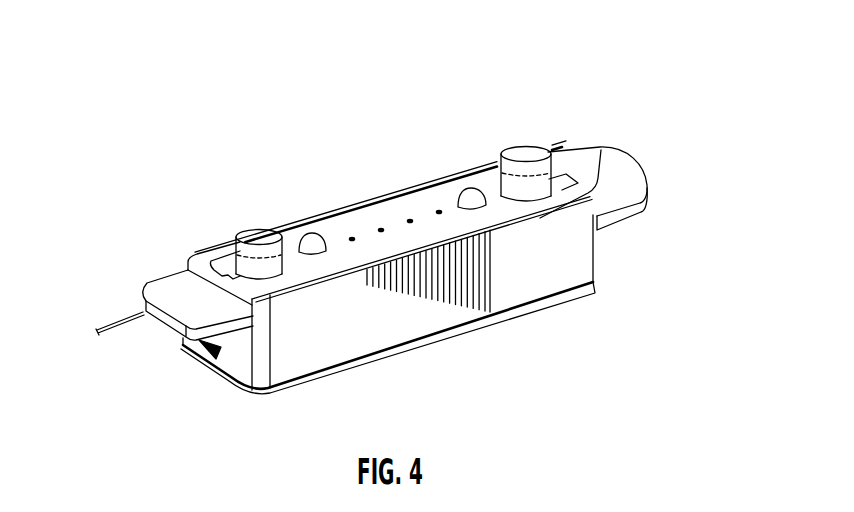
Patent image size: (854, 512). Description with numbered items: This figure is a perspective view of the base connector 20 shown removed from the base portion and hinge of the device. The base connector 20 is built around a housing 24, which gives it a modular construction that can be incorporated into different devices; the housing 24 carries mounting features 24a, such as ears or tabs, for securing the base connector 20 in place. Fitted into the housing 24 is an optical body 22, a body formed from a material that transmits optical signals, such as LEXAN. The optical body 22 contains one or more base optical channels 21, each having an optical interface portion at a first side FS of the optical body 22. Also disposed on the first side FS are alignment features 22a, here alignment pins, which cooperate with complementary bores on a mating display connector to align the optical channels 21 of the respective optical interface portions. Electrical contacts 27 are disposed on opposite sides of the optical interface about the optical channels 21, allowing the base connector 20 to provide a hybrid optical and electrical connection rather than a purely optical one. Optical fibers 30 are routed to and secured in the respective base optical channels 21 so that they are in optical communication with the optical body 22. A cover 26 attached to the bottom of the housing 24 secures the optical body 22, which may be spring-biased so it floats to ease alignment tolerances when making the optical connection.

The base connector 20 is at (680, 87).
The base optical channels 21 is at (380, 229).
The optical body 22 is at (500, 212).
The alignment features 22a is at (257, 236).
The housing 24 is at (208, 248).
The mounting features 24a is at (172, 330).
The cover 26 is at (232, 398).
The electrical contacts 27 is at (474, 190).
The optical fibers 30 is at (118, 315).
The first side FS is at (416, 231).